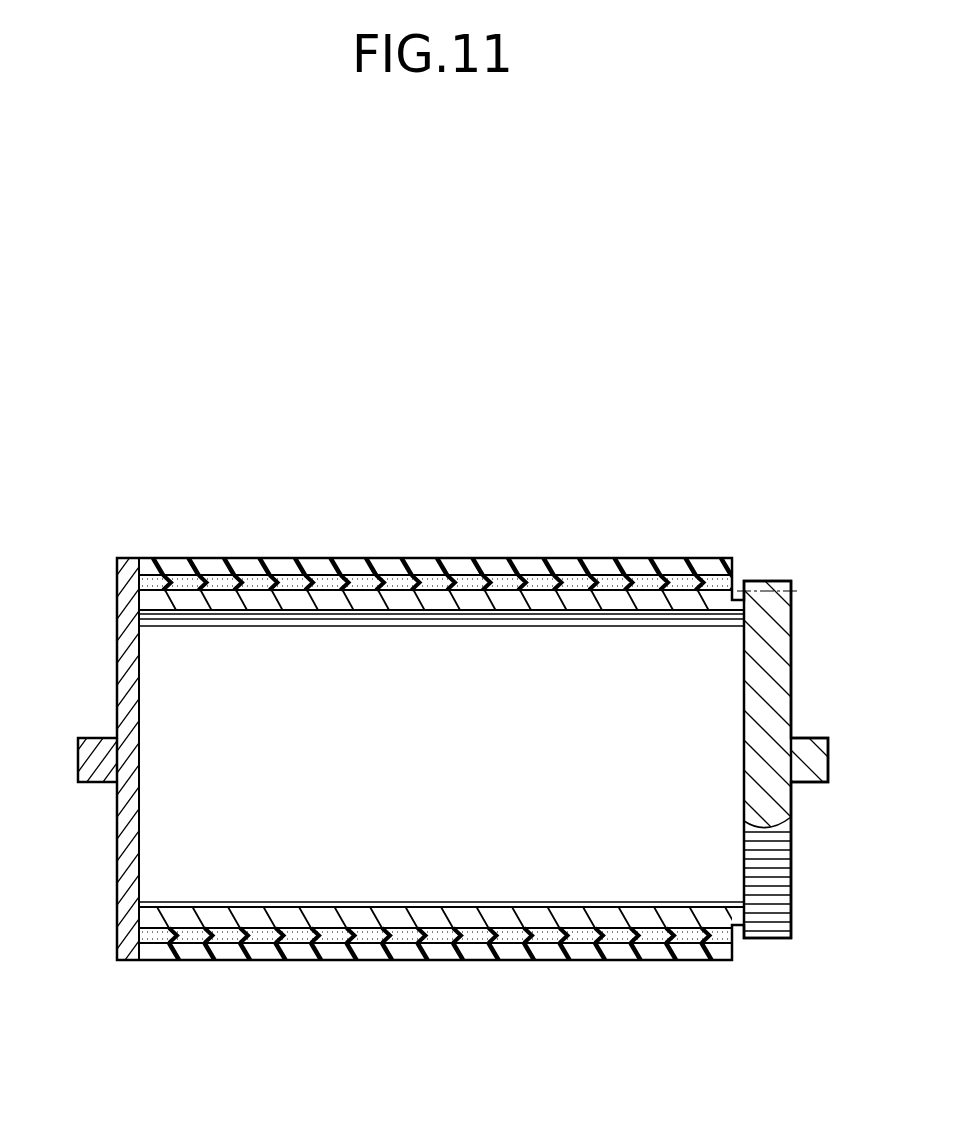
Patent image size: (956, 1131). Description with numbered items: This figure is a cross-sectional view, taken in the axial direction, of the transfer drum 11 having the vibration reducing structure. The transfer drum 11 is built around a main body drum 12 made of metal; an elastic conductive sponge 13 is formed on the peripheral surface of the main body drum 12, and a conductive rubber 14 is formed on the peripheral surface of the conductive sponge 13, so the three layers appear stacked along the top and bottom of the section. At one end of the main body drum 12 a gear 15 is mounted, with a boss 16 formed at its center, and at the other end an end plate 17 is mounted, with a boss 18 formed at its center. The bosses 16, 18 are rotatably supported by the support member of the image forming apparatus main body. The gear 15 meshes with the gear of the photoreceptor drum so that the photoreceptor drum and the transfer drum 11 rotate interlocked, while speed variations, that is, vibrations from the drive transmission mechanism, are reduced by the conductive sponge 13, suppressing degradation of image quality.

The transfer drum 11 is at (232, 455).
The main body drum 12 is at (420, 597).
The conductive sponge 13 is at (362, 582).
The conductive rubber 14 is at (316, 570).
The gear 15 is at (775, 582).
The boss 16 is at (828, 745).
The end plate 17 is at (122, 836).
The boss 18 is at (90, 742).